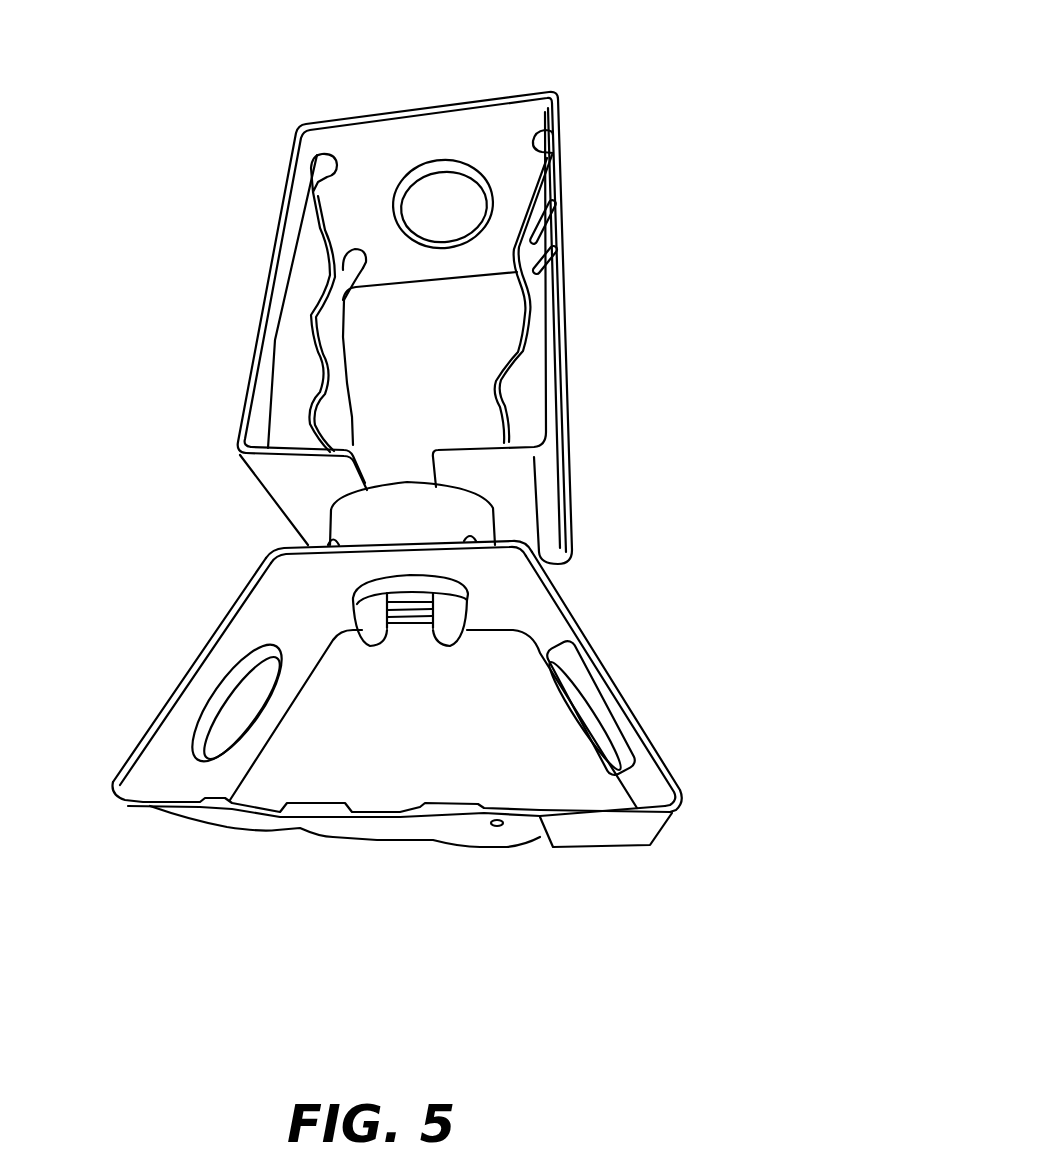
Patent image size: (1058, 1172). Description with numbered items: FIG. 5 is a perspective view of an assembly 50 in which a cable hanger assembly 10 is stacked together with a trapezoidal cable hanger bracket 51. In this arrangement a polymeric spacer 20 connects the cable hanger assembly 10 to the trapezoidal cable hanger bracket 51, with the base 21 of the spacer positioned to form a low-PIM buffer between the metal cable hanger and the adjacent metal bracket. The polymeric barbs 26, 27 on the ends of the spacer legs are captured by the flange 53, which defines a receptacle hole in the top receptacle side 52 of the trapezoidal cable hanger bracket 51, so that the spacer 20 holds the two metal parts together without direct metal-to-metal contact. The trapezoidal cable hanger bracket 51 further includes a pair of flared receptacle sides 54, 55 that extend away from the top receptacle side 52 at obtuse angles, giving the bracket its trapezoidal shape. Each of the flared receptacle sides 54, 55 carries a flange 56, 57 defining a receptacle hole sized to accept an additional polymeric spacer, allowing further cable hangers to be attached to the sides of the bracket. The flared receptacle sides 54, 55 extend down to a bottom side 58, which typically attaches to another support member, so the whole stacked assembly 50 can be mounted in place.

The cable hanger assembly 10 is at (626, 285).
The polymeric spacer 20 is at (490, 464).
The base 21 is at (398, 503).
The polymeric barb 26 is at (383, 648).
The polymeric barb 27 is at (452, 633).
The assembly 50 is at (510, 292).
The trapezoidal cable hanger bracket 51 is at (414, 721).
The top receptacle side 52 is at (327, 570).
The flange 53 is at (422, 645).
The flared receptacle side 54 is at (203, 647).
The flared receptacle side 55 is at (603, 665).
The flange 56 is at (215, 710).
The flange 57 is at (608, 727).
The bottom side 58 is at (377, 832).